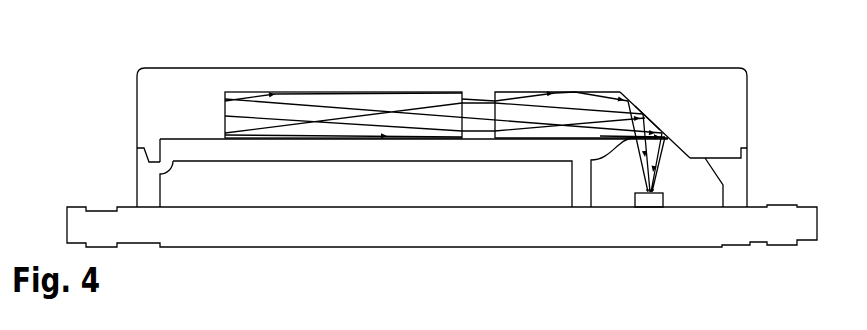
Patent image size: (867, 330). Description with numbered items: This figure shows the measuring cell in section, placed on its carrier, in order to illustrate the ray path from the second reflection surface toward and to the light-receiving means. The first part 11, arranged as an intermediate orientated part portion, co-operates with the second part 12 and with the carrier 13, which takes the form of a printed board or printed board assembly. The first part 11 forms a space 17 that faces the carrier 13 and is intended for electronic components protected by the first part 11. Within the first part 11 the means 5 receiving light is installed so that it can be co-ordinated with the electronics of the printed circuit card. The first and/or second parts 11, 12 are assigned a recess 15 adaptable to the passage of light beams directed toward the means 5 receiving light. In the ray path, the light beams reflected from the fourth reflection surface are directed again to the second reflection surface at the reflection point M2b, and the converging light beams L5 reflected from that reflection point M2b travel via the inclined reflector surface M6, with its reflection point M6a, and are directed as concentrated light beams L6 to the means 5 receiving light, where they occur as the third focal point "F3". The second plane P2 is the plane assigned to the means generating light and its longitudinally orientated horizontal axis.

The second part 12 is at (143, 95).
The first part 11 is at (143, 172).
The carrier 13 is at (302, 238).
The space 17 is at (233, 187).
The reflection point M2b is at (225, 112).
The light beams L5 is at (483, 103).
The concentrated light beams L6 is at (660, 165).
The reflector surface M6 is at (641, 112).
The reflection point M6a is at (650, 119).
The recess 15 is at (705, 185).
The means receiving light 5 is at (652, 200).
The third focal point F3 is at (645, 188).
The second plane P2 is at (794, 199).